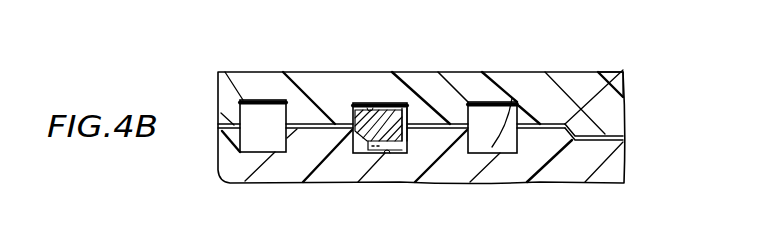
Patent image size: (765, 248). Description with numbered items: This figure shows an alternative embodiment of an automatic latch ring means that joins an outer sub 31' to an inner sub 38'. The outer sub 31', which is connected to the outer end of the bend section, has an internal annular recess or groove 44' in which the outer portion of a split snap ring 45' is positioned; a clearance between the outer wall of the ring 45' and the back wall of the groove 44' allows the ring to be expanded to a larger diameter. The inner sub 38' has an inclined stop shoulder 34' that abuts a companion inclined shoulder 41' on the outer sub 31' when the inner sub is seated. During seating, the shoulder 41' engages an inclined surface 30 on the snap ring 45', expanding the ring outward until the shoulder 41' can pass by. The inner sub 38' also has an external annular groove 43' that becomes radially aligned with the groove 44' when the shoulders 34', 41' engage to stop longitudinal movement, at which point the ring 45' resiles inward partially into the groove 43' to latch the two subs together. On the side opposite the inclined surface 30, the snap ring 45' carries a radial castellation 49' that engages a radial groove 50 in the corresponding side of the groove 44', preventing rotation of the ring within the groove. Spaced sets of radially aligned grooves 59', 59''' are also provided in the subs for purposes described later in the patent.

The outer sub 31' is at (421, 98).
The shield/pole block 59''' is at (246, 82).
The radially aligned groove 59' is at (382, 106).
The internal annular groove 44' is at (379, 61).
The split snap ring 45' is at (394, 77).
The radial groove 50 is at (410, 116).
The external annular groove 43' is at (382, 192).
The inclined surface 30 is at (352, 148).
The radial castellation 49' is at (391, 70).
The inclined shoulder 41' is at (585, 185).
The inner sub 38' is at (457, 189).
The inclined stop shoulder 34' is at (639, 58).